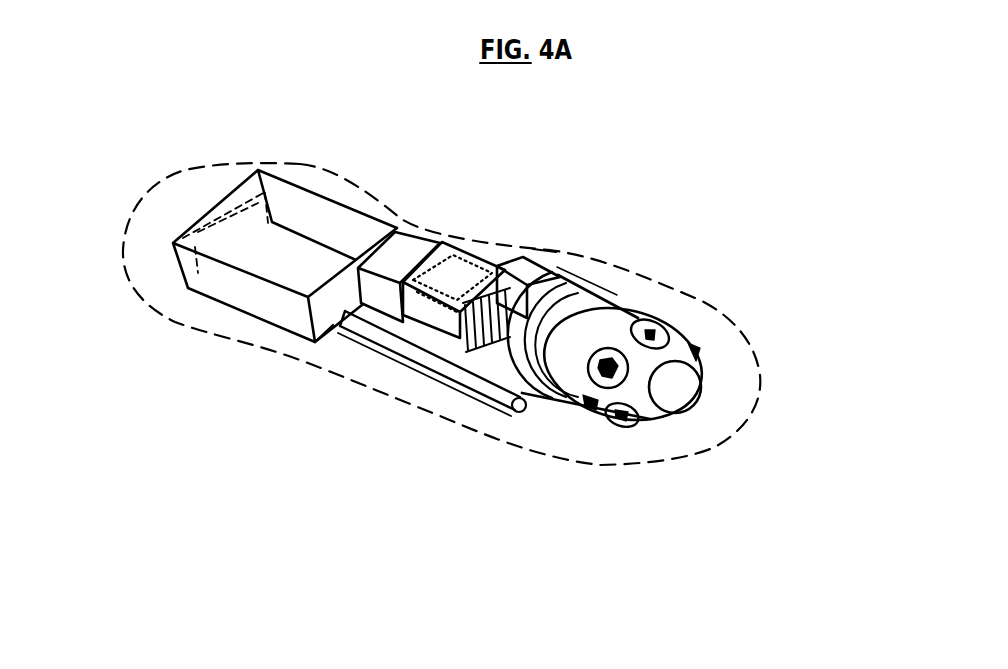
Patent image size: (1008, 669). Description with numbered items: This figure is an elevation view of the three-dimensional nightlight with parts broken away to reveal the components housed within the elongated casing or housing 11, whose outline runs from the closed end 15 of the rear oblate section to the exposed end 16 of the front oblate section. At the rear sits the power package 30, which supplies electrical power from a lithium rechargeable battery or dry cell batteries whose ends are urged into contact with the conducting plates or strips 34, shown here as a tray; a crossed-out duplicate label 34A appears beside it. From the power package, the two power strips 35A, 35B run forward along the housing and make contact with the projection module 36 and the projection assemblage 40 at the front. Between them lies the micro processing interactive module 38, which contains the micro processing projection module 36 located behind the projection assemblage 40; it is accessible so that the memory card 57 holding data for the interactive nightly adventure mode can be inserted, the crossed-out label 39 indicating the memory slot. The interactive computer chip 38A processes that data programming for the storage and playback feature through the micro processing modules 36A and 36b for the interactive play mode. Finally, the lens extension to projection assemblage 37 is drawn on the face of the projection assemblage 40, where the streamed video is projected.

The casing or housing 11 is at (537, 250).
The closed end 15 is at (150, 207).
The exposed end 16 is at (740, 428).
The power package 30 is at (262, 258).
The conducting plates or strips 34 is at (232, 233).
The battery tray (deleted) 34A is at (233, 381).
The power strip 35A is at (378, 345).
The power strip 35B is at (443, 340).
The micro media data projection module 36 is at (523, 273).
The micro processing module 36A is at (596, 275).
The micro processing module 36b is at (422, 343).
The lens extension to projection assemblage 37 is at (596, 362).
The micro processing interactive module 38 is at (438, 250).
The interactive computer chip 38A is at (388, 264).
The memory slot 39 is at (506, 176).
The projection assemblage 40 is at (724, 355).
The memory card 57 is at (463, 272).